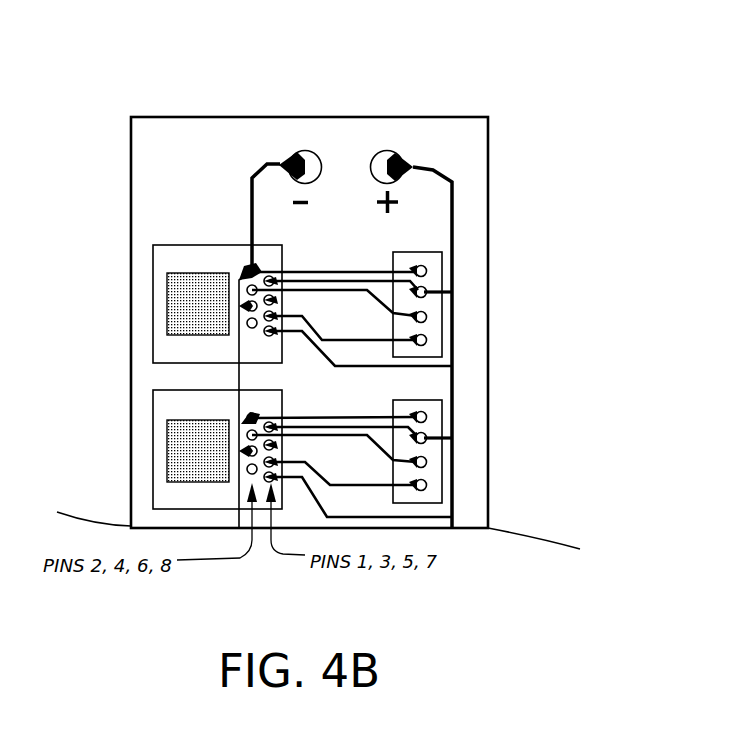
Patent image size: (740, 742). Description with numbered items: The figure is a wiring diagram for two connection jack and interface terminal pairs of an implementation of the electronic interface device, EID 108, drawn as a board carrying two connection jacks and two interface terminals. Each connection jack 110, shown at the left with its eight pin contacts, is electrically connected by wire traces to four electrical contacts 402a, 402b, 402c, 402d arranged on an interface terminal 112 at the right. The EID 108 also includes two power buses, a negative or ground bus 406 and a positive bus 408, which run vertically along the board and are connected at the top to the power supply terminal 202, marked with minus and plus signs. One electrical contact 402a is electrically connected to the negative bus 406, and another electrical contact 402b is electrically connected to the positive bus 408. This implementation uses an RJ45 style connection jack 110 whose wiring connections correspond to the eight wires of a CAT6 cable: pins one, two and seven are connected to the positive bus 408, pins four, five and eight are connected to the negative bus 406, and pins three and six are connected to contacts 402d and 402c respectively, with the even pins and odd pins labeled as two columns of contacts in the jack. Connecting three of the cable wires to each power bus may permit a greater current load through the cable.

The electronic interface device 108 is at (186, 166).
The power supply terminal 202 is at (367, 134).
The negative bus 406 is at (252, 208).
The positive bus 408 is at (440, 233).
The interface terminal 112 is at (457, 293).
The connection jack 110 is at (153, 295).
The electrical contact 402a is at (429, 268).
The electrical contact 402b is at (429, 291).
The electrical contact 402c is at (429, 316).
The electrical contact 402d is at (429, 339).